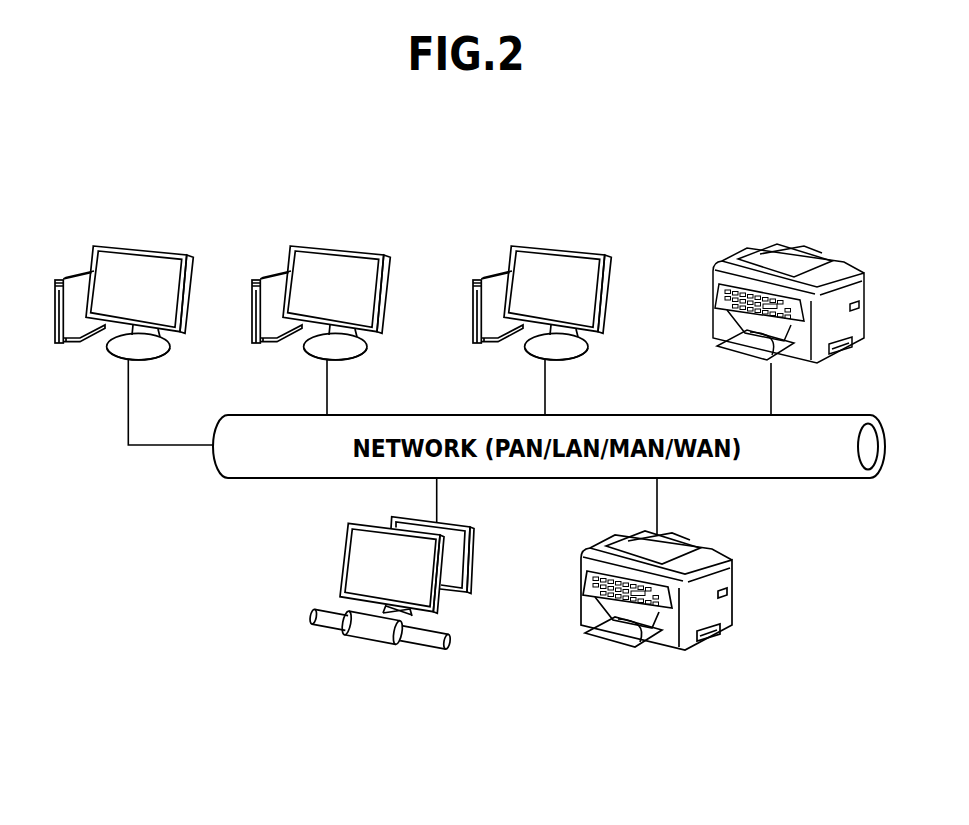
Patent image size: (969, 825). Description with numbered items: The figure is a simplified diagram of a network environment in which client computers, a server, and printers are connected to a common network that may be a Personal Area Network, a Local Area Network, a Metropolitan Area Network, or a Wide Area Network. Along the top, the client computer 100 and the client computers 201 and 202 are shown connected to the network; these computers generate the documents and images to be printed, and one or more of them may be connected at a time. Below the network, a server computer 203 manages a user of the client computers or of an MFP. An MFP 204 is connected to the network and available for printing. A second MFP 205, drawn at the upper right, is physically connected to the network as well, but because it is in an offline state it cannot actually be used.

The client computer 100 is at (147, 247).
The client computer 201 is at (344, 247).
The client computer 202 is at (563, 247).
The server computer 203 is at (348, 560).
The MFP 204 is at (653, 648).
The MFP 205 is at (770, 248).